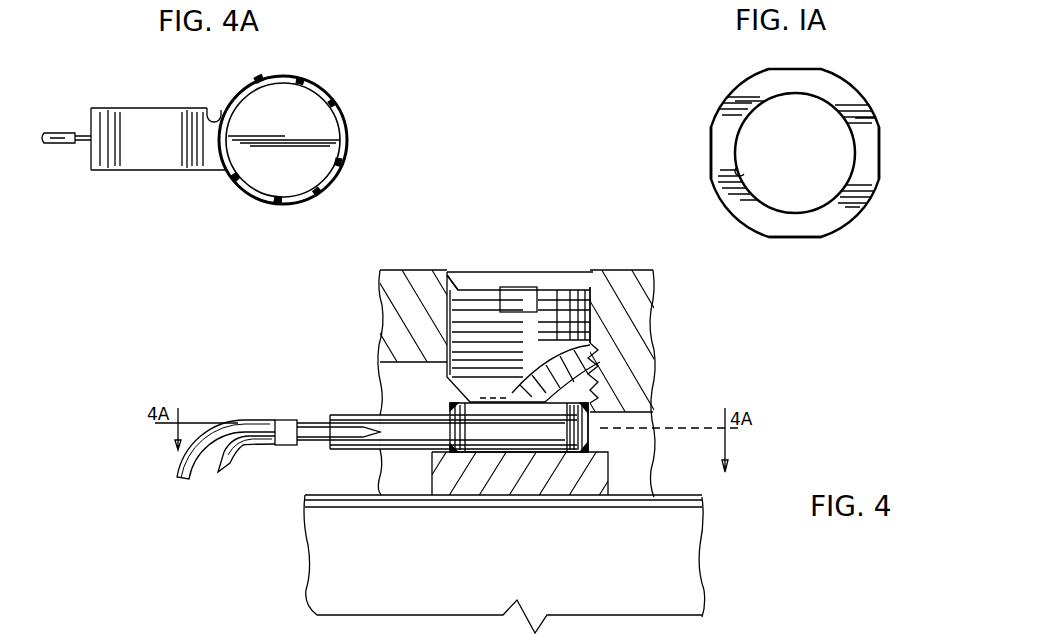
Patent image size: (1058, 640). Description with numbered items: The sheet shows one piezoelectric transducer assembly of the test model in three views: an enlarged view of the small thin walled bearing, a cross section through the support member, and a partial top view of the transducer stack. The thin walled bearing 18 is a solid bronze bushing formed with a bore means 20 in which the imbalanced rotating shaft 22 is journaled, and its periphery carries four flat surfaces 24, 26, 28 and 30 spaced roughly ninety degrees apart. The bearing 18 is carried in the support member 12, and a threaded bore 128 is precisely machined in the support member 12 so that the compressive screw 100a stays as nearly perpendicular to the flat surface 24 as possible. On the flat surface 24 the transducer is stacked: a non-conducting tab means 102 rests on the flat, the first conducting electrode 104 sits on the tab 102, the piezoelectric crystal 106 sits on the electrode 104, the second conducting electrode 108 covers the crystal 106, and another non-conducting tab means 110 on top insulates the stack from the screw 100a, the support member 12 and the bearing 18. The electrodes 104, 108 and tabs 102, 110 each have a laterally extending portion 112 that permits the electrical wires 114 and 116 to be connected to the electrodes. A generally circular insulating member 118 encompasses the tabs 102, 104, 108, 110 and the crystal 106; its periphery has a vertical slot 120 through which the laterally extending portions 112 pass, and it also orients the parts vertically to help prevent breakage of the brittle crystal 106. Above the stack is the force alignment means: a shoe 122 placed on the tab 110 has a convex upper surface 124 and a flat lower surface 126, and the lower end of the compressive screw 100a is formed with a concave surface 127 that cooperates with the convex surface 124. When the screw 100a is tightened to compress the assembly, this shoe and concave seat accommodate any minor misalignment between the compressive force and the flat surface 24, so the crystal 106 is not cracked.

In FIG. 4, the support member 12 is at (392, 301).
In FIG. 4, the thin walled bearing 18 is at (610, 475).
In FIG. 1A, the bore means 20 is at (737, 169).
In FIG. 4, the rotating shaft 22 is at (680, 545).
In FIG. 1A, the flat surface 24 is at (793, 68).
In FIG. 4, the flat surface 24 is at (652, 438).
In FIG. 1A, the flat surface 26 is at (882, 152).
In FIG. 1A, the flat surface 28 is at (787, 240).
In FIG. 1A, the flat surface 30 is at (708, 148).
In FIG. 4, the compressive screw 100a is at (550, 297).
In FIG. 4, the non-conducting tab means 102 is at (567, 453).
In FIG. 4A, the conducting electrode 104 is at (155, 163).
In FIG. 4, the conducting electrode 104 is at (527, 437).
In FIG. 4A, the piezoelectric crystal 106 is at (313, 163).
In FIG. 4, the piezoelectric crystal 106 is at (537, 413).
In FIG. 4, the conducting electrode 108 is at (505, 423).
In FIG. 4, the non-conducting tab means 110 is at (480, 417).
In FIG. 4A, the laterally extending portion 112 is at (163, 118).
In FIG. 4, the laterally extending portion 112 is at (368, 460).
In FIG. 4A, the electrical wire 114 is at (55, 142).
In FIG. 4, the electrical wire 114 is at (235, 473).
In FIG. 4, the electrical wire 116 is at (182, 480).
In FIG. 4A, the insulating member 118 is at (340, 140).
In FIG. 4A, the vertical slot 120 is at (212, 108).
In FIG. 4, the vertical slot 120 is at (450, 433).
In FIG. 4, the shoe 122 is at (577, 410).
In FIG. 4, the upper surface 124 is at (557, 378).
In FIG. 4, the lower surface 126 is at (583, 395).
In FIG. 4, the concave surface 127 is at (570, 360).
In FIG. 4, the threaded bore 128 is at (457, 273).